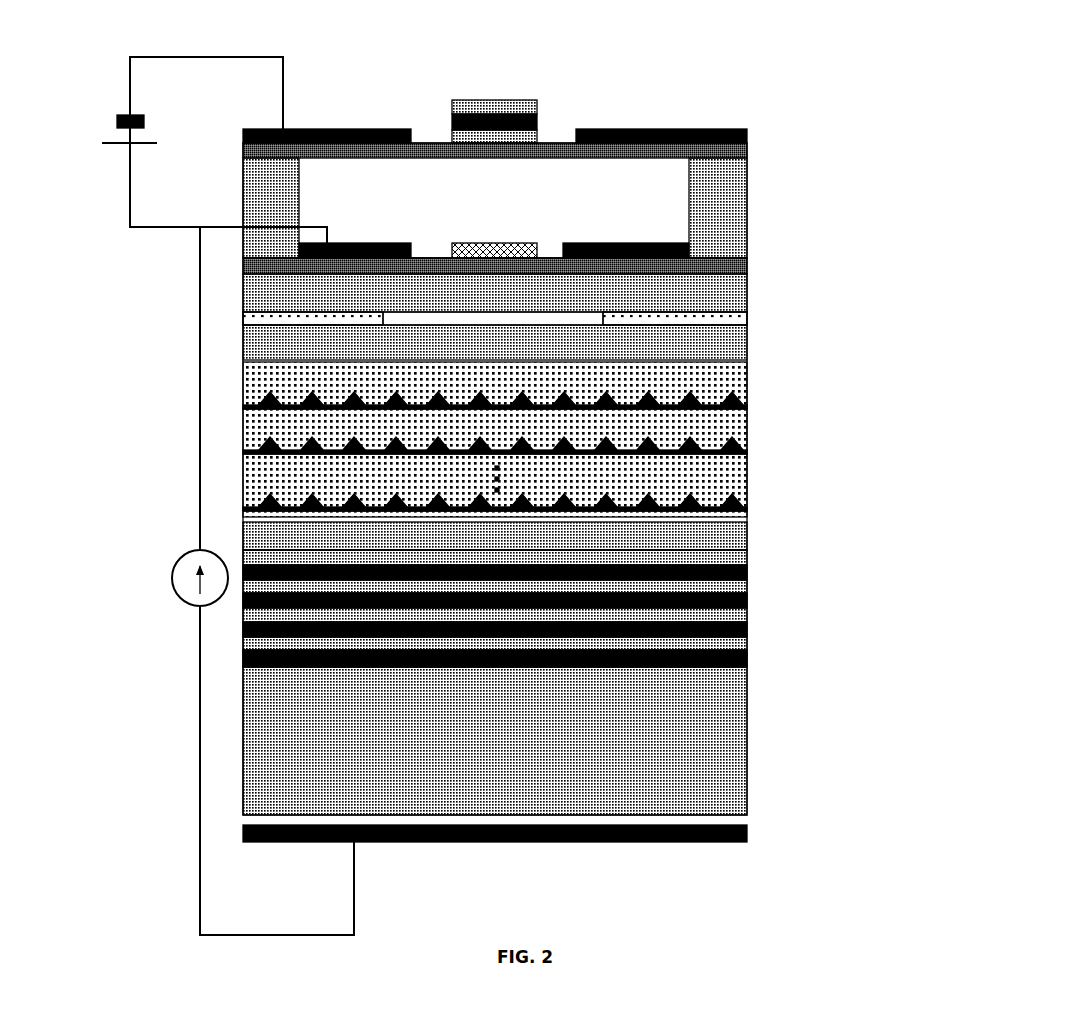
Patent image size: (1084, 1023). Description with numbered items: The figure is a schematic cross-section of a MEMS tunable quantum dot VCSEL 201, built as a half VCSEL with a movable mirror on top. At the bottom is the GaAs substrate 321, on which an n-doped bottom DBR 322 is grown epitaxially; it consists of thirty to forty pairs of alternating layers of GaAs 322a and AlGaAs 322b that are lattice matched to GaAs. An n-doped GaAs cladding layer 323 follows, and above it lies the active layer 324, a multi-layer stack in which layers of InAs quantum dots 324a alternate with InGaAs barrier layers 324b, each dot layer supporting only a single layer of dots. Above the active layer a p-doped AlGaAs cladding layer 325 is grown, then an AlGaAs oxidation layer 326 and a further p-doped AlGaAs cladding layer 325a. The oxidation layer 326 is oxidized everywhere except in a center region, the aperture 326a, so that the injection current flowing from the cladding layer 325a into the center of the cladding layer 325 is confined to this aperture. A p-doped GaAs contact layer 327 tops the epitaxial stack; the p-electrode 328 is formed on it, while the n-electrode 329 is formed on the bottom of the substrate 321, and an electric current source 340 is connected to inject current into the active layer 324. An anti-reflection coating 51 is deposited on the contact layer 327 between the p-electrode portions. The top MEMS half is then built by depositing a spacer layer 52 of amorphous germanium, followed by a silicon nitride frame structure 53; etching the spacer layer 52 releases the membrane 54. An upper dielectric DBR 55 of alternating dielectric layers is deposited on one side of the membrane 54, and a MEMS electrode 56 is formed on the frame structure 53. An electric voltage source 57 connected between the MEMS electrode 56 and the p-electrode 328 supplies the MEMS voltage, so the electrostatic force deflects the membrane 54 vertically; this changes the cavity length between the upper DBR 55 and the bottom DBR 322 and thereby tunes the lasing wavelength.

The quantum dots tunable VCSEL 201 is at (408, 536).
The upper dielectric DBR 55 is at (463, 97).
The MEMS electrode 56 is at (329, 125).
The membrane 54 is at (578, 170).
The frame structure 53 is at (738, 154).
The spacer layer 52 is at (718, 212).
The p-electrode 328 is at (430, 251).
The anti-reflection coating 51 is at (497, 242).
The p-doped GaAs contact layer 327 is at (737, 266).
The p-doped AlGaAs cladding layer 325a is at (495, 293).
The AlGaAs oxidation layer 326 is at (736, 316).
The aperture 326a is at (568, 323).
The p-doped AlGaAs cladding layer 325 is at (495, 342).
The active layer 324 is at (586, 451).
The InAs quantum dots 324a is at (742, 482).
The InGaAs barrier layers 324b is at (740, 486).
The n-doped GaAs cladding layer 323 is at (495, 536).
The n-doped DBR 322 is at (587, 619).
The GaAs layer 322a is at (749, 630).
The AlGaAs layer 322b is at (769, 550).
The GaAs substrate 321 is at (495, 741).
The n-electrode 329 is at (451, 846).
The electric voltage source 57 is at (186, 150).
The electric current source 340 is at (212, 581).